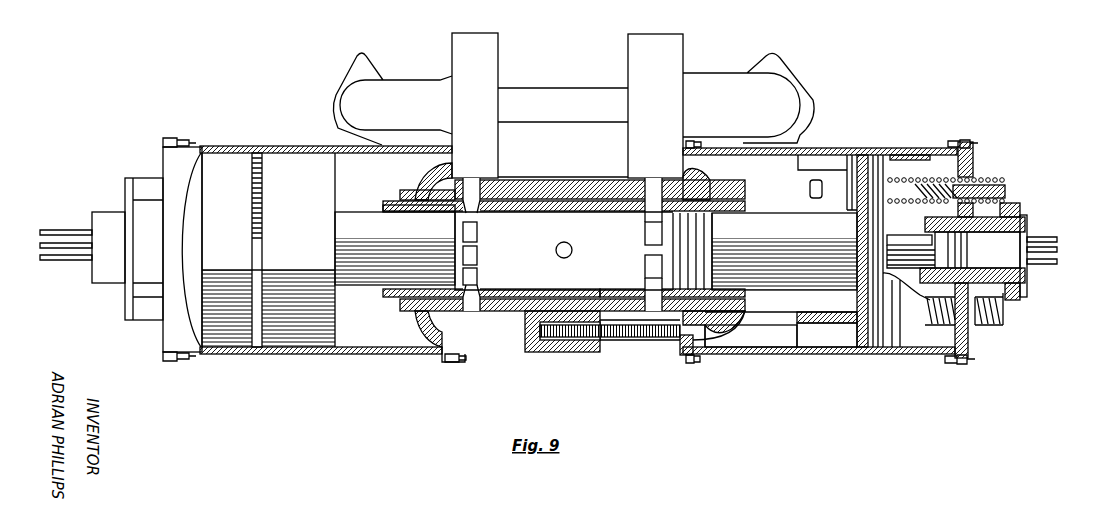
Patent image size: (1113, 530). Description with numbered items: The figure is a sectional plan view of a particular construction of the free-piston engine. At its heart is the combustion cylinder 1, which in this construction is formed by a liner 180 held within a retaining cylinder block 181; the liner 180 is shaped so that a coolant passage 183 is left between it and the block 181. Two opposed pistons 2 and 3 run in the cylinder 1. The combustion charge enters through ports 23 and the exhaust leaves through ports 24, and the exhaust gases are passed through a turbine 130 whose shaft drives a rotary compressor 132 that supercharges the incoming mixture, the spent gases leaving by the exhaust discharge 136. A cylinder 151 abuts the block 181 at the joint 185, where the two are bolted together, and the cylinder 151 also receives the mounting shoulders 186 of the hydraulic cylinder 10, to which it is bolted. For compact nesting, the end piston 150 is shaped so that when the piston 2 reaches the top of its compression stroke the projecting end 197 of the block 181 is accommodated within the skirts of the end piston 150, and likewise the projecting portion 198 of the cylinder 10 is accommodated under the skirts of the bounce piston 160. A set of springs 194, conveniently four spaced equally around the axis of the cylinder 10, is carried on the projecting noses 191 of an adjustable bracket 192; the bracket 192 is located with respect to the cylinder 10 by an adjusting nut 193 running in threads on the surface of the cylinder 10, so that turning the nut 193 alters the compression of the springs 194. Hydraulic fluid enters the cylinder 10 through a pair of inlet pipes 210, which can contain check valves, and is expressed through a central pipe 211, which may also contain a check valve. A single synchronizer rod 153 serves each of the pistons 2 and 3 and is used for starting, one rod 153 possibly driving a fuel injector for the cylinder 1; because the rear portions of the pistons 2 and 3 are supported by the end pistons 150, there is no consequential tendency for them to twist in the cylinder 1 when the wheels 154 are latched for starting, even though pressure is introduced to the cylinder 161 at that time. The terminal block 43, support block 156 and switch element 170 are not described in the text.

The cylinder 1 is at (564, 251).
The piston 2 is at (784, 251).
The piston 3 is at (395, 248).
The cylinder 10 is at (956, 219).
The ports 23 is at (478, 234).
The ports 24 is at (643, 235).
The terminal block 43 is at (977, 250).
The turbine 130 is at (590, 106).
The rotary compressor 132 is at (415, 105).
The exhaust discharge 136 is at (748, 98).
The end piston 150 is at (827, 182).
The cylinder 151 is at (790, 355).
The synchronizer rod 153 is at (333, 320).
The wheels 154 is at (562, 340).
The support block 156 is at (826, 323).
The bounce piston 160 is at (920, 345).
The cylinder 161 is at (875, 163).
The switch element 170 is at (810, 190).
The liner 180 is at (553, 292).
The retaining cylinder block 181 is at (512, 314).
The coolant passage 183 is at (632, 205).
The bolted joint 185 is at (700, 146).
The mounting shoulders 186 is at (966, 142).
The projecting noses 191 is at (1003, 190).
The adjustable bracket 192 is at (1005, 302).
The adjusting nut 193 is at (1020, 297).
The springs 194 is at (985, 179).
The projecting end 197 is at (760, 200).
The projecting portion 198 is at (922, 222).
The inlet pipes 210 is at (1056, 238).
The central pipe 211 is at (1058, 249).